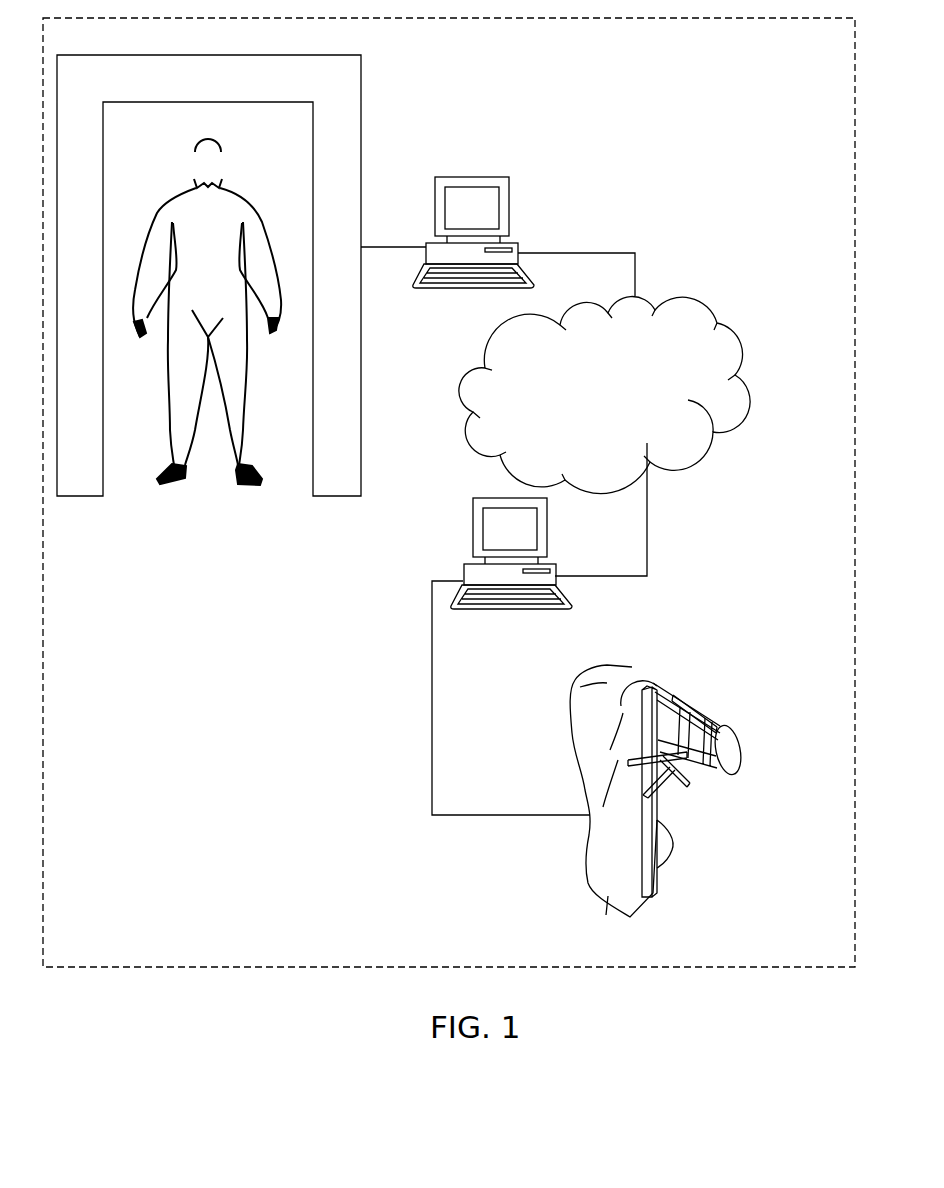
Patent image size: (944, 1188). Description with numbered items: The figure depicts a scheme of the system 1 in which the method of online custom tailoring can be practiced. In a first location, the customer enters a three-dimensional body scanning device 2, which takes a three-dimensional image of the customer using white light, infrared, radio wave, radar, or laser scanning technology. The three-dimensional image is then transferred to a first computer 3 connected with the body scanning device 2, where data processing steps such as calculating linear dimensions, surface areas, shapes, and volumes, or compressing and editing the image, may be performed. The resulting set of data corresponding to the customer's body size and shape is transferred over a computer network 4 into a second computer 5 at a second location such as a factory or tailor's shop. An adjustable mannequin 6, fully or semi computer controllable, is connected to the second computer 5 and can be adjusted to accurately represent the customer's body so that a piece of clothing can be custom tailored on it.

The system 1 is at (449, 492).
The three-dimensional body scanning device 2 is at (333, 86).
The first computer 3 is at (510, 259).
The computer network 4 is at (604, 395).
The second computer 5 is at (480, 578).
The adjustable mannequin 6 is at (668, 658).